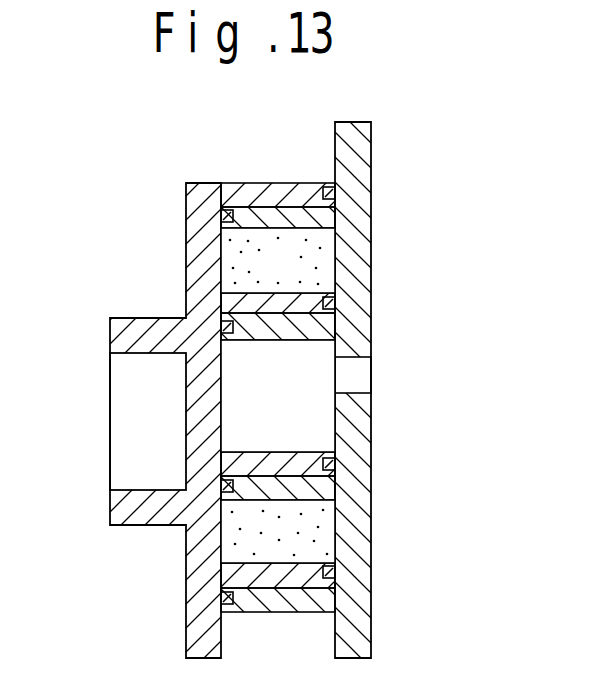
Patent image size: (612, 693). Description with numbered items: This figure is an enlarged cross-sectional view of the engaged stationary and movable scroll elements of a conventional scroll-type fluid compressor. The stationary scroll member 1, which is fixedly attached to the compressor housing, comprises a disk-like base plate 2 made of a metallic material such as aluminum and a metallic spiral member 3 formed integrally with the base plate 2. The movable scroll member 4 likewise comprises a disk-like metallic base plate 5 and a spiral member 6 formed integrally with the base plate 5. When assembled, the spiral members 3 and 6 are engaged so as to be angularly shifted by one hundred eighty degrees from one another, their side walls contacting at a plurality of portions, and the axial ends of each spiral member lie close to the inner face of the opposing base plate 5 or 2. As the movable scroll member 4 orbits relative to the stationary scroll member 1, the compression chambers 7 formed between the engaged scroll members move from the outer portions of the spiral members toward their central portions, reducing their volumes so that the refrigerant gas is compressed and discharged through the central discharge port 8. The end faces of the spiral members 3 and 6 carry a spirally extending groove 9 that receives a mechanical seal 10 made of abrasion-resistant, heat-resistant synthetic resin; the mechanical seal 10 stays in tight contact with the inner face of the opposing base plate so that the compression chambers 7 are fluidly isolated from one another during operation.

The stationary scroll member 1 is at (371, 245).
The base plate 2 is at (353, 303).
The spiral member 3 is at (297, 207).
The movable scroll member 4 is at (186, 224).
The base plate 5 is at (195, 273).
The spiral member 6 is at (248, 198).
The compression chambers 7 is at (289, 272).
The central discharge port 8 is at (354, 359).
The spirally extending groove 9 is at (323, 188).
The mechanical seal 10 is at (333, 188).